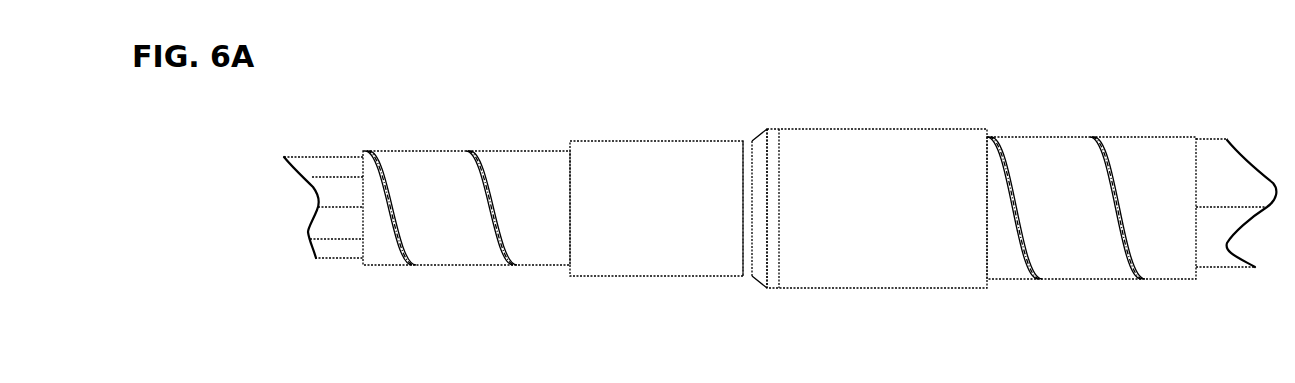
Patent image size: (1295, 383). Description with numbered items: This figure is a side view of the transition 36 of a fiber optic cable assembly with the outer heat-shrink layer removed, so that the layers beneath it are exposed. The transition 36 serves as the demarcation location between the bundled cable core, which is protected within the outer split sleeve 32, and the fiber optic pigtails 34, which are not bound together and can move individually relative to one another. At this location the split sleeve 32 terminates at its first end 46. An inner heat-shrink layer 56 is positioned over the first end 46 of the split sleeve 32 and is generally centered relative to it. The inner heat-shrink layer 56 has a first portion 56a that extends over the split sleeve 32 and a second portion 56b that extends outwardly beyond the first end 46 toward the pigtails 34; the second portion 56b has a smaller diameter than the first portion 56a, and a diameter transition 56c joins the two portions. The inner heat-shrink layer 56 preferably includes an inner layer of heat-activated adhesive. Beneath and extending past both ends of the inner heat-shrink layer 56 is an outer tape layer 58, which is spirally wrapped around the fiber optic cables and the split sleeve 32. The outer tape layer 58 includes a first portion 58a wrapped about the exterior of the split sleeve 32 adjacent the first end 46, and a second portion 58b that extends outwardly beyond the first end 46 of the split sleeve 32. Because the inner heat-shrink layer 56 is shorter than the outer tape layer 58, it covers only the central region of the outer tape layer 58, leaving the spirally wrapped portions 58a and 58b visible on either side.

The split sleeve 32 is at (1213, 138).
The fiber optic pigtails 34 is at (325, 157).
The transition 36 is at (779, 190).
The first end of the split sleeve 46 is at (762, 130).
The inner heat-shrink layer 56 is at (778, 205).
The first portion of the inner heat-shrink layer 56a is at (930, 127).
The second portion of the inner heat-shrink layer 56b is at (657, 139).
The diameter transition 56c is at (760, 282).
The outer tape layer 58 is at (779, 216).
The first portion of the outer tape layer 58a is at (1088, 279).
The second portion of the outer tape layer 58b is at (517, 148).